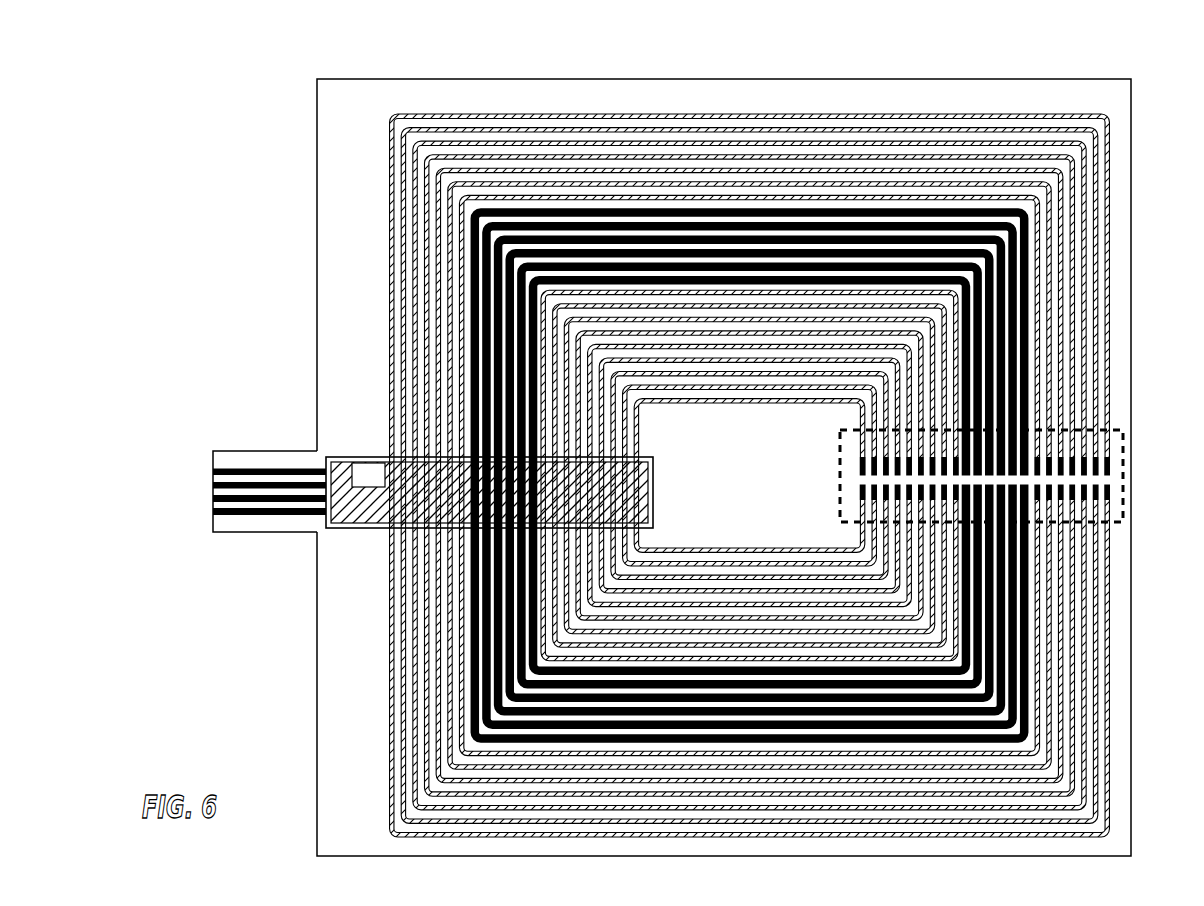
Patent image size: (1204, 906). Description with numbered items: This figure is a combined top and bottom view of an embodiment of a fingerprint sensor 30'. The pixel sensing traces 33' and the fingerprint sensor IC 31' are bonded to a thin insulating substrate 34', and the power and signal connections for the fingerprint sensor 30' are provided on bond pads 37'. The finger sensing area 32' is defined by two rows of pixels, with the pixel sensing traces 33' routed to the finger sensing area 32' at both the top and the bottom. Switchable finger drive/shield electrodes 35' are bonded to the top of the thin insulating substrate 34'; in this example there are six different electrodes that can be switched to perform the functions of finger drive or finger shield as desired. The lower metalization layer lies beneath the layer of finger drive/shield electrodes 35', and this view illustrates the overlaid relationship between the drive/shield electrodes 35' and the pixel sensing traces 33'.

The fingerprint sensor 30' is at (708, 465).
The fingerprint sensor IC 31' is at (446, 535).
The finger sensing area 32' is at (1013, 450).
The pixel sensing traces 33' is at (716, 467).
The thin insulating substrate 34' is at (724, 492).
The finger drive/shield electrodes 35' is at (668, 467).
The bond pads 37' is at (269, 436).